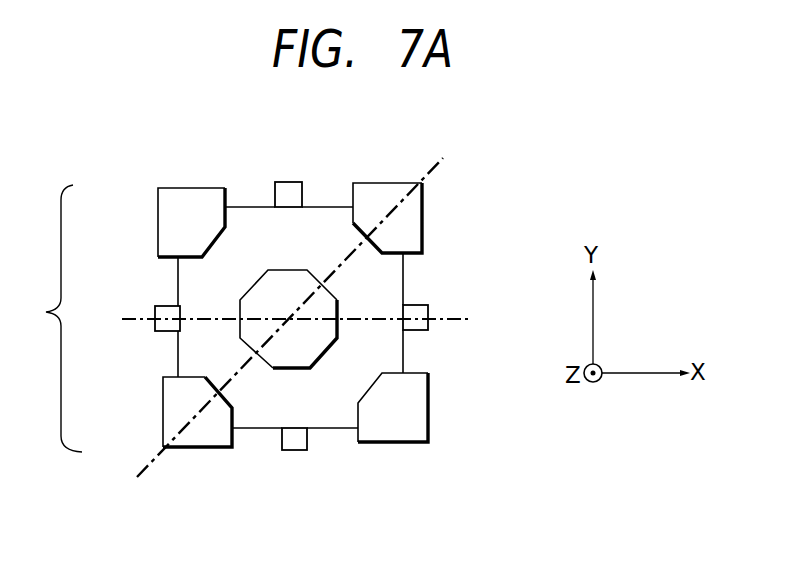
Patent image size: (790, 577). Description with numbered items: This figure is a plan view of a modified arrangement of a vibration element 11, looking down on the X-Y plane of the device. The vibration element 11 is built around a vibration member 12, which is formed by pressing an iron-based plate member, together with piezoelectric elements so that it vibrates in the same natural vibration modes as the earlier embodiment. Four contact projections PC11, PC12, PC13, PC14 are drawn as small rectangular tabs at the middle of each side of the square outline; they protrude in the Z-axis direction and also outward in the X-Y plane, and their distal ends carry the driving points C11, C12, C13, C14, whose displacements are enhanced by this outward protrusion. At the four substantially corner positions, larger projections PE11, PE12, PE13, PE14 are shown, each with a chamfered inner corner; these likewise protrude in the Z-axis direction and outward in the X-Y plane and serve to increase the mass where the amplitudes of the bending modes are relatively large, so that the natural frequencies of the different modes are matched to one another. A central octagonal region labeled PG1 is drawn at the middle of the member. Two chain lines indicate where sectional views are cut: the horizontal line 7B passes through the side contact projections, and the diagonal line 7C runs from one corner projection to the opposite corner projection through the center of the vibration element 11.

The vibration element 11 is at (52, 318).
The vibration member 12 is at (322, 213).
The projection PE11 is at (422, 213).
The projection PE12 is at (187, 193).
The projection PE13 is at (170, 408).
The projection PE14 is at (415, 432).
The contact projection PC11 is at (420, 303).
The contact projection PC12 is at (277, 185).
The contact projection PC13 is at (167, 337).
The contact projection PC14 is at (305, 452).
The driving point C11 is at (425, 333).
The driving point C12 is at (302, 183).
The driving point C13 is at (163, 305).
The driving point C14 is at (290, 452).
The ground electrode PG1 is at (325, 330).
The line 7B— 7B is at (294, 320).
The line 7C— 7C is at (282, 314).